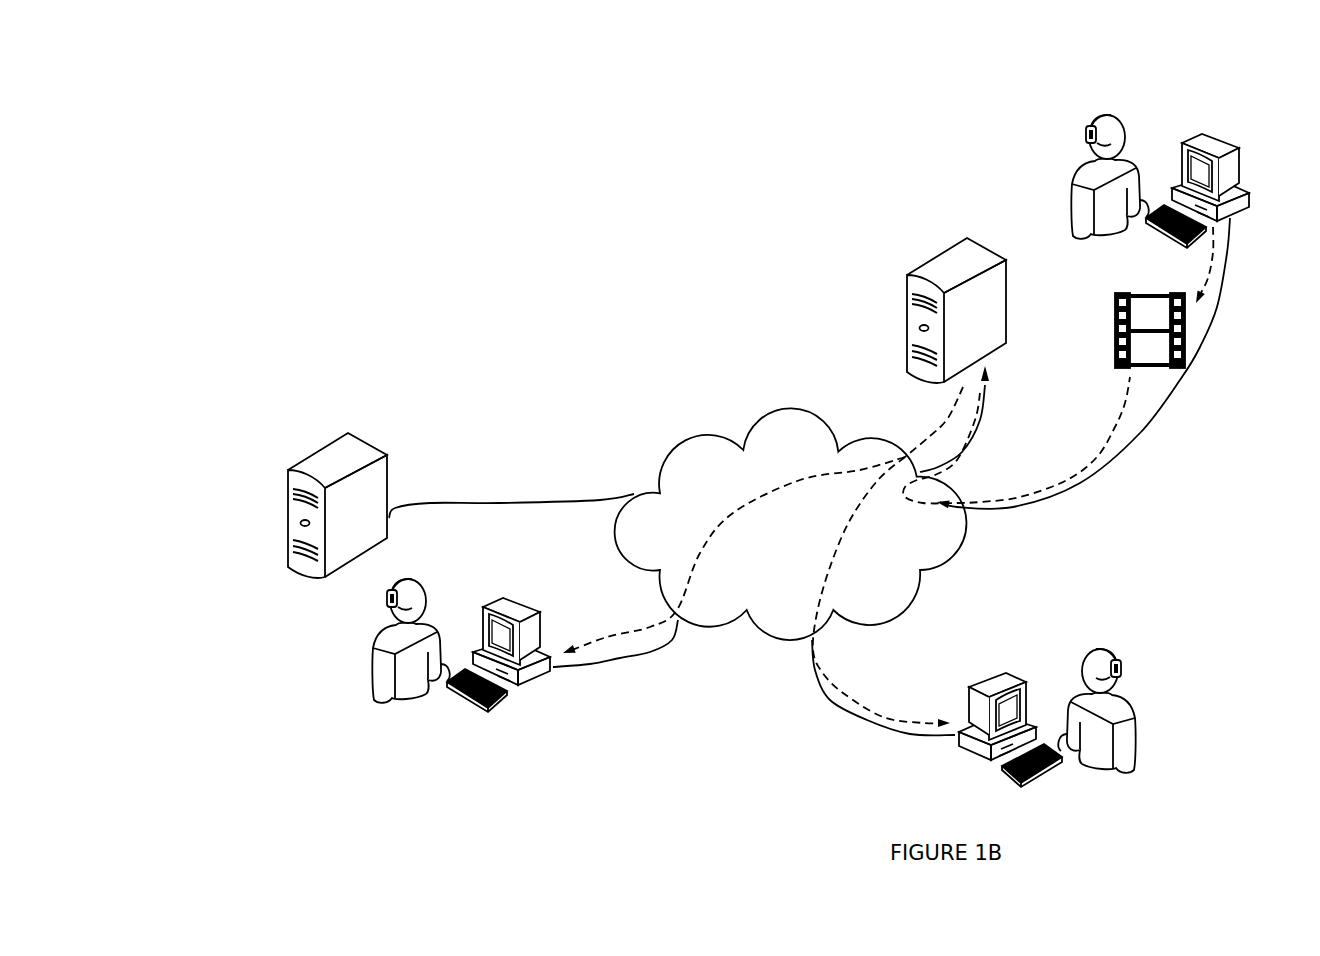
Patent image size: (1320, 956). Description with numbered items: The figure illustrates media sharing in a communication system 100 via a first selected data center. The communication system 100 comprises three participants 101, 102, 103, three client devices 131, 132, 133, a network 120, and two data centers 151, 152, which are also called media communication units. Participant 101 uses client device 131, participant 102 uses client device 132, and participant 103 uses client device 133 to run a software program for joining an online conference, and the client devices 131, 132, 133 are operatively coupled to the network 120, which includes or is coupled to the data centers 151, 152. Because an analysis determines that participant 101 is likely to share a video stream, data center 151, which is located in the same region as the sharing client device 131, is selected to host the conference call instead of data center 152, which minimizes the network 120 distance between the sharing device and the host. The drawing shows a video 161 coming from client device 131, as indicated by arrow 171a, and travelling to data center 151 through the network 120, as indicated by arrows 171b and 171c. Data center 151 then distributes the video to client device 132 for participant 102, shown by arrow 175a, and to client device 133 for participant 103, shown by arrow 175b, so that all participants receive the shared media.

The communication system 100 is at (134, 51).
The participant 101 is at (1090, 162).
The participant 102 is at (392, 623).
The participant 103 is at (1120, 697).
The network 120 is at (808, 436).
The client device 131 is at (1227, 143).
The client device 132 is at (510, 603).
The client device 133 is at (1000, 677).
The data center 151 is at (1007, 300).
The data center 152 is at (389, 520).
The video 161 is at (1187, 340).
The arrow 171a is at (1214, 245).
The arrow 171b is at (1115, 427).
The arrow 171c is at (984, 397).
The arrow 175a is at (667, 617).
The arrow 175b is at (857, 685).